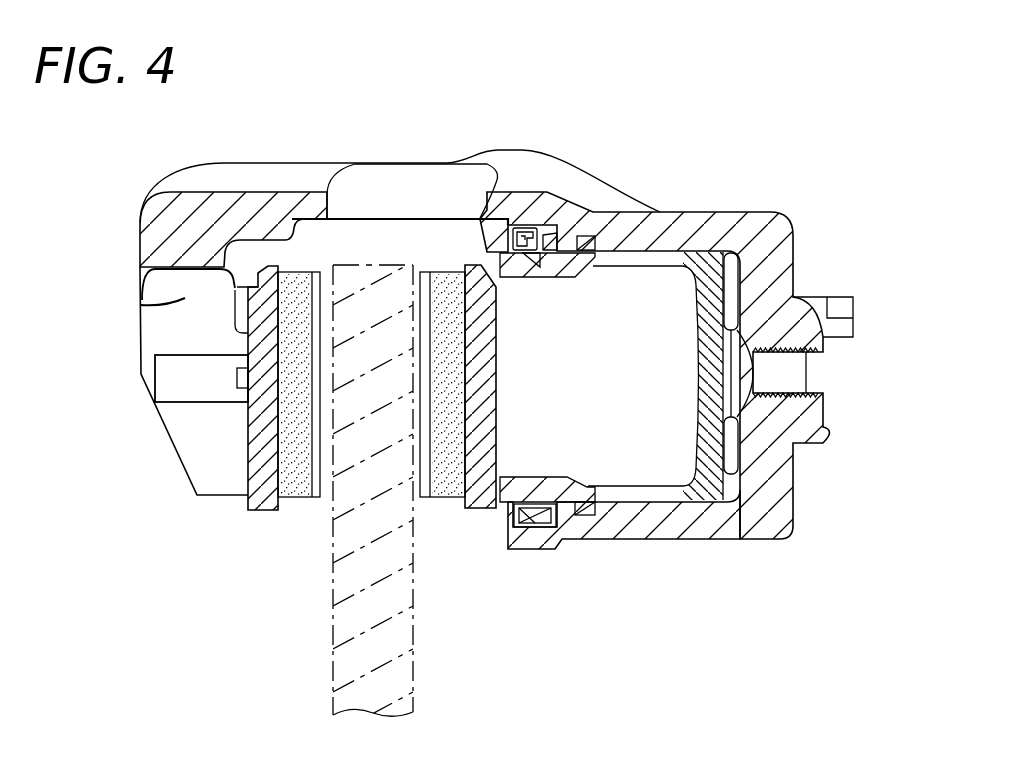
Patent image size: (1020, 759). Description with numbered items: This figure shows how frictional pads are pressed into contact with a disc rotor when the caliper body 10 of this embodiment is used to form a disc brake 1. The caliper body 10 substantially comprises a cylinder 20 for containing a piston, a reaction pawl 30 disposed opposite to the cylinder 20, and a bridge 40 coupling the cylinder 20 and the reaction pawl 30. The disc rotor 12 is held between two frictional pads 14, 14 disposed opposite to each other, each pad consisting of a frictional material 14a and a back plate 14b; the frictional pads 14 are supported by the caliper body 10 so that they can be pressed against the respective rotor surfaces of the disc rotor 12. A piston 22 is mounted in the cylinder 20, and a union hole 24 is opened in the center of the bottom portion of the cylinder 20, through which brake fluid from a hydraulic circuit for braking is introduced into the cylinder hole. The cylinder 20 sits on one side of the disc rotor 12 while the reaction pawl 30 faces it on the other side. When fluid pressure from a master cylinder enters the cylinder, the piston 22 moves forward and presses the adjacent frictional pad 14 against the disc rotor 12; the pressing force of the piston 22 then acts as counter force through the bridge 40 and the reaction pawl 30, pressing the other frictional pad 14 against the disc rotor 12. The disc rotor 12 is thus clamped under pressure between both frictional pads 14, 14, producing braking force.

The disc brake 1 is at (572, 122).
The caliper body 10 is at (654, 171).
The disc rotor 12 is at (397, 617).
The frictional pad 14 is at (447, 495).
The frictional material 14a is at (303, 498).
The back plate 14b is at (260, 504).
The cylinder 20 is at (712, 232).
The piston 22 is at (643, 497).
The union hole 24 is at (793, 373).
The reaction pawl 30 is at (180, 427).
The bridge 40 is at (290, 172).